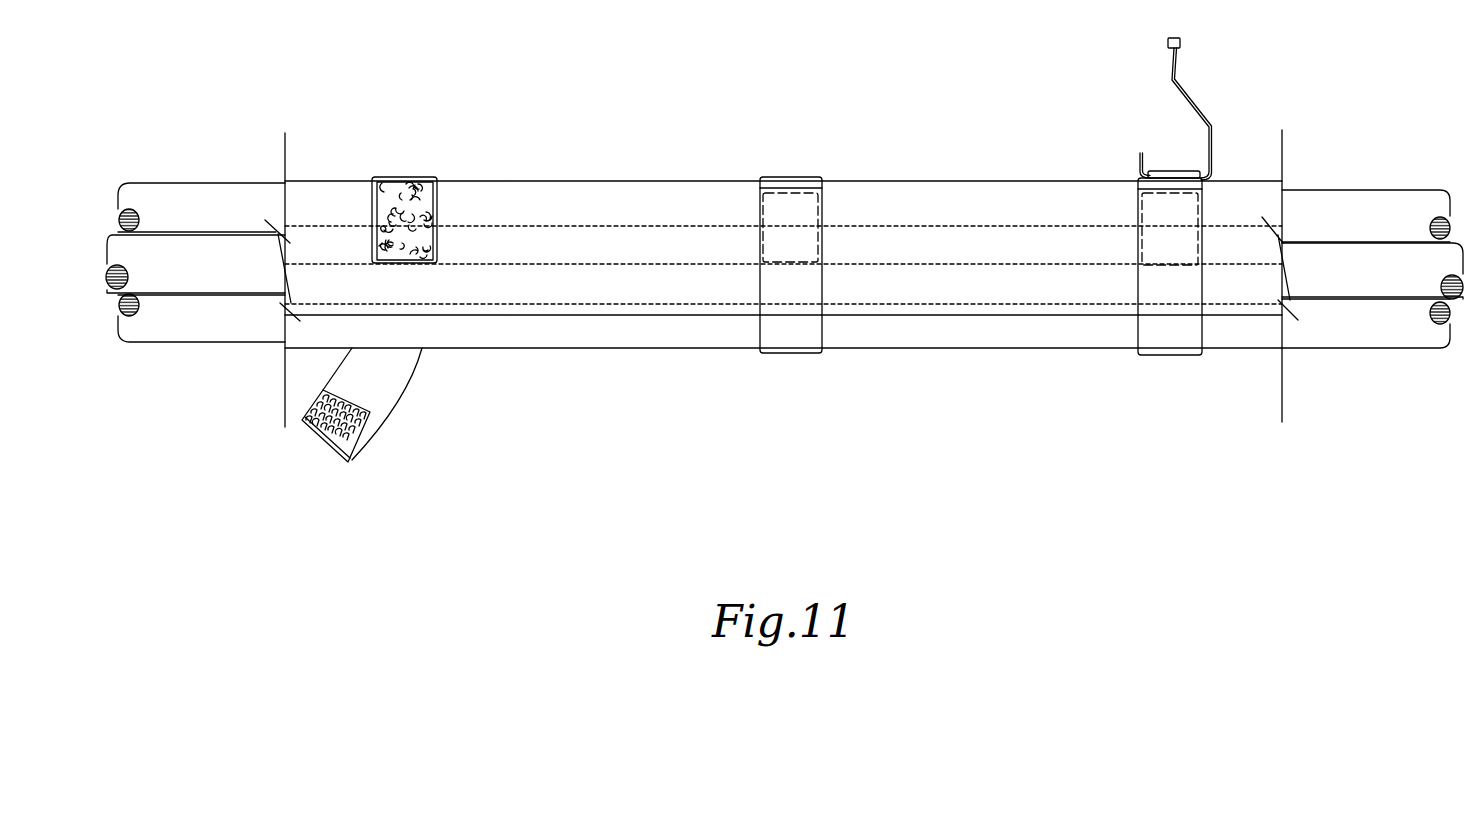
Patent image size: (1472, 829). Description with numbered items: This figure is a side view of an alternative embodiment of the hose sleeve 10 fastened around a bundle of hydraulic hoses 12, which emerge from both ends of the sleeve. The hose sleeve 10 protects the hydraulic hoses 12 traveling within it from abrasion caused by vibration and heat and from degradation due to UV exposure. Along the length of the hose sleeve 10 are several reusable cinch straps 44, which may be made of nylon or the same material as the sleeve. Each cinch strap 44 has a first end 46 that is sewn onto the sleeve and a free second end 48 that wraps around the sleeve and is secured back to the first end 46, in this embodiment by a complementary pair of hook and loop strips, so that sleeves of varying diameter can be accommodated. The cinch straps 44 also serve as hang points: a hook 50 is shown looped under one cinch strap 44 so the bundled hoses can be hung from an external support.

The hose sleeve 10 is at (633, 178).
The hydraulic hoses 12 is at (225, 182).
The cinch strap 44 is at (360, 151).
The first end 46 is at (440, 263).
The second end 48 is at (837, 265).
The hook 50 is at (1195, 92).